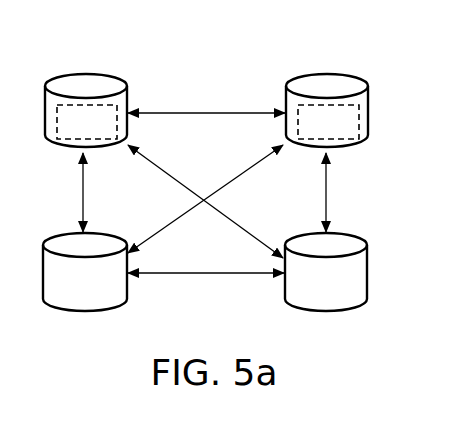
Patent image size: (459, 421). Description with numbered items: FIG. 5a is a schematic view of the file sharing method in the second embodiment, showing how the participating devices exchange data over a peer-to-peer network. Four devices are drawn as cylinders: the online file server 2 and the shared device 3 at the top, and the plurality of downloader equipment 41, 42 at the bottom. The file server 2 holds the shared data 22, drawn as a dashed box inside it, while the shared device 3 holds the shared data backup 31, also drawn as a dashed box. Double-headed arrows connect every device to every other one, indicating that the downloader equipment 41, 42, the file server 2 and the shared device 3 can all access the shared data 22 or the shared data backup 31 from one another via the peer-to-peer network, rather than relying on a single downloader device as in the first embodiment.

The online file server 2 is at (97, 84).
The shared data 22 is at (87, 122).
The shared device 3 is at (337, 84).
The shared data backup 31 is at (328, 122).
The downloader equipment 41 is at (85, 272).
The downloader equipment 42 is at (326, 272).